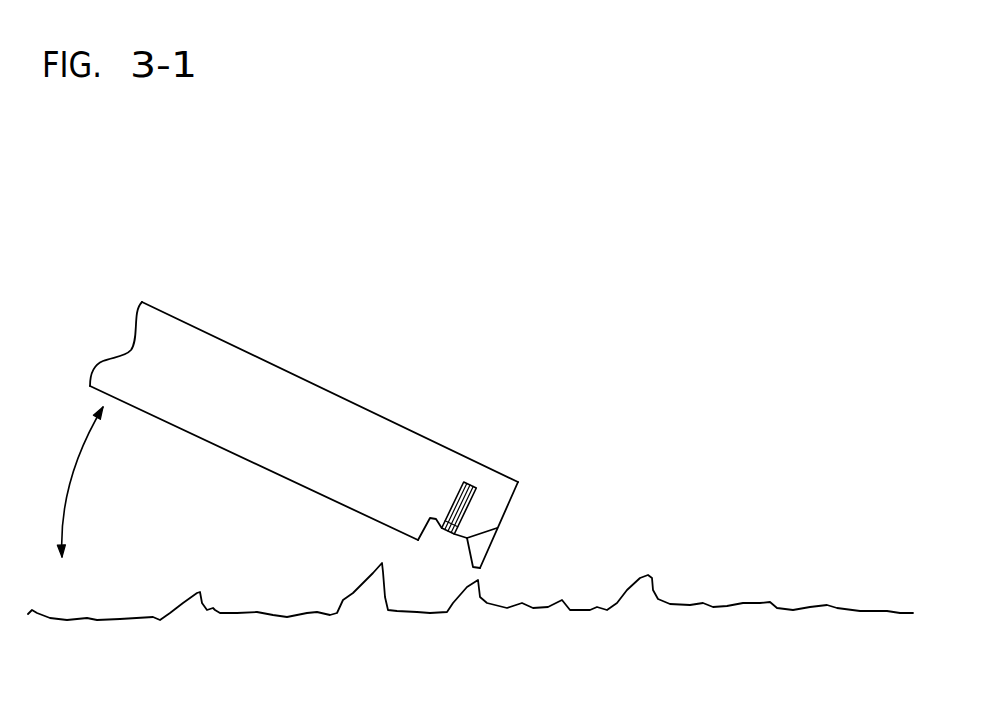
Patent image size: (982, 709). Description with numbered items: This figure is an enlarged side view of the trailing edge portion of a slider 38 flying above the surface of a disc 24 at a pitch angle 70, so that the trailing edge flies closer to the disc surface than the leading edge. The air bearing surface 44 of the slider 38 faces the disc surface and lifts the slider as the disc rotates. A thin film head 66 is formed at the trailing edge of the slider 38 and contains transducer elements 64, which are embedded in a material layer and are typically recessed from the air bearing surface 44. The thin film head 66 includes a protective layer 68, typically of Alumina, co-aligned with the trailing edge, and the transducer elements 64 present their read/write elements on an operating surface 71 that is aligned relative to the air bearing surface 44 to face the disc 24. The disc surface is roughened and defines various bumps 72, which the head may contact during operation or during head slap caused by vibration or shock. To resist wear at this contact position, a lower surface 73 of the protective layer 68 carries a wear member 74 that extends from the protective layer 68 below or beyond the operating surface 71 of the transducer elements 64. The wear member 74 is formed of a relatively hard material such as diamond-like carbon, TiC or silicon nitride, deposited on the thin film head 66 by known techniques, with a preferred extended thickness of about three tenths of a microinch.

The disc 24 is at (745, 602).
The slider 38 is at (332, 390).
The air bearing surface 44 is at (192, 435).
The transducer elements 64 is at (471, 484).
The thin film head 66 is at (557, 462).
The protective layer 68 is at (495, 496).
The pitch angle 70 is at (83, 455).
The operating surface 71 is at (425, 538).
The bumps 72 is at (483, 590).
The lower surface 73 is at (452, 530).
The wear member 74 is at (470, 554).